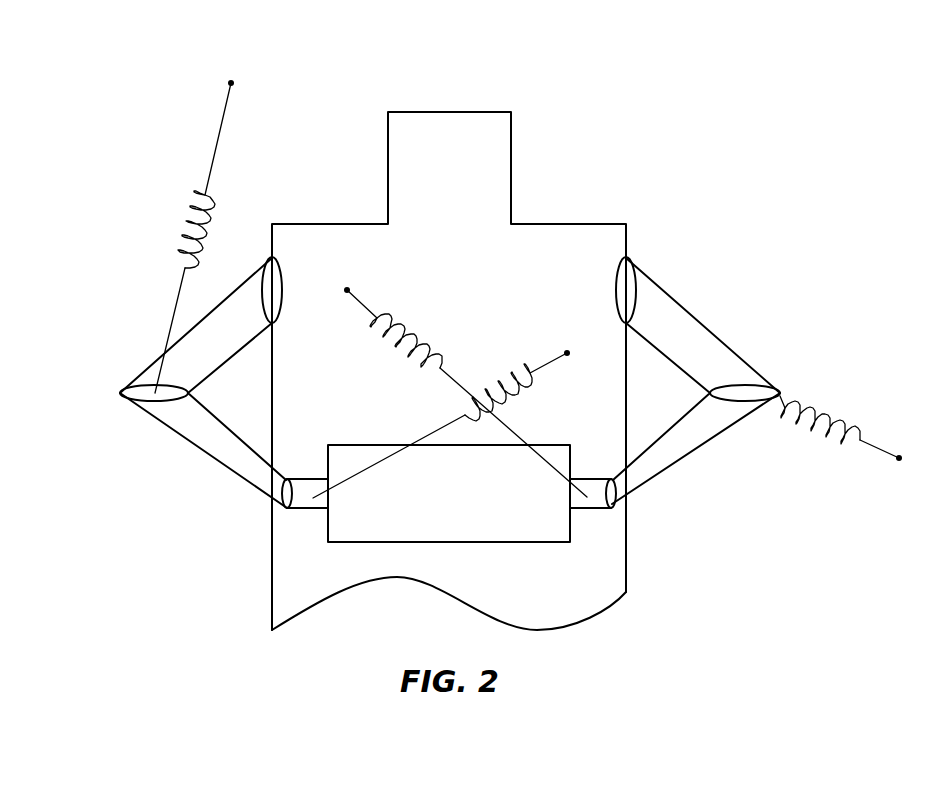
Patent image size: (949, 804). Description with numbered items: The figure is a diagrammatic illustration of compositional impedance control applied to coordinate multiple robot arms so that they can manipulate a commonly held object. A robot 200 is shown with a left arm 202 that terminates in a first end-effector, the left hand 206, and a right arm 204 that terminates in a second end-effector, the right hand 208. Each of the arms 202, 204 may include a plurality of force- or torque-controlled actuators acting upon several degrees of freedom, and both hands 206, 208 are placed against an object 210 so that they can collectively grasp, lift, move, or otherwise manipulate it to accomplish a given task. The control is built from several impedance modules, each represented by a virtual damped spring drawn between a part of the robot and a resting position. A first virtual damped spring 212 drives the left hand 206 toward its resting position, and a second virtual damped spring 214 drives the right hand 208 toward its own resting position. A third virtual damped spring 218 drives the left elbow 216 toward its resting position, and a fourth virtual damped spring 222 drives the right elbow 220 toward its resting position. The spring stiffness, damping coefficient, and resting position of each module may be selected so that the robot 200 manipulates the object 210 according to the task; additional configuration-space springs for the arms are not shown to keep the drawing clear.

The robot 200 is at (685, 68).
The left arm 202 is at (757, 458).
The right arm 204 is at (140, 458).
The first end-effector (left hand) 206 is at (595, 499).
The second end-effector (right hand) 208 is at (305, 499).
The object 210 is at (449, 493).
The first virtual damped spring 212 is at (402, 351).
The second virtual damped spring 214 is at (511, 398).
The left elbow 216 is at (745, 398).
The third virtual damped spring 218 is at (836, 418).
The right elbow 220 is at (143, 387).
The fourth virtual damped spring 222 is at (185, 212).